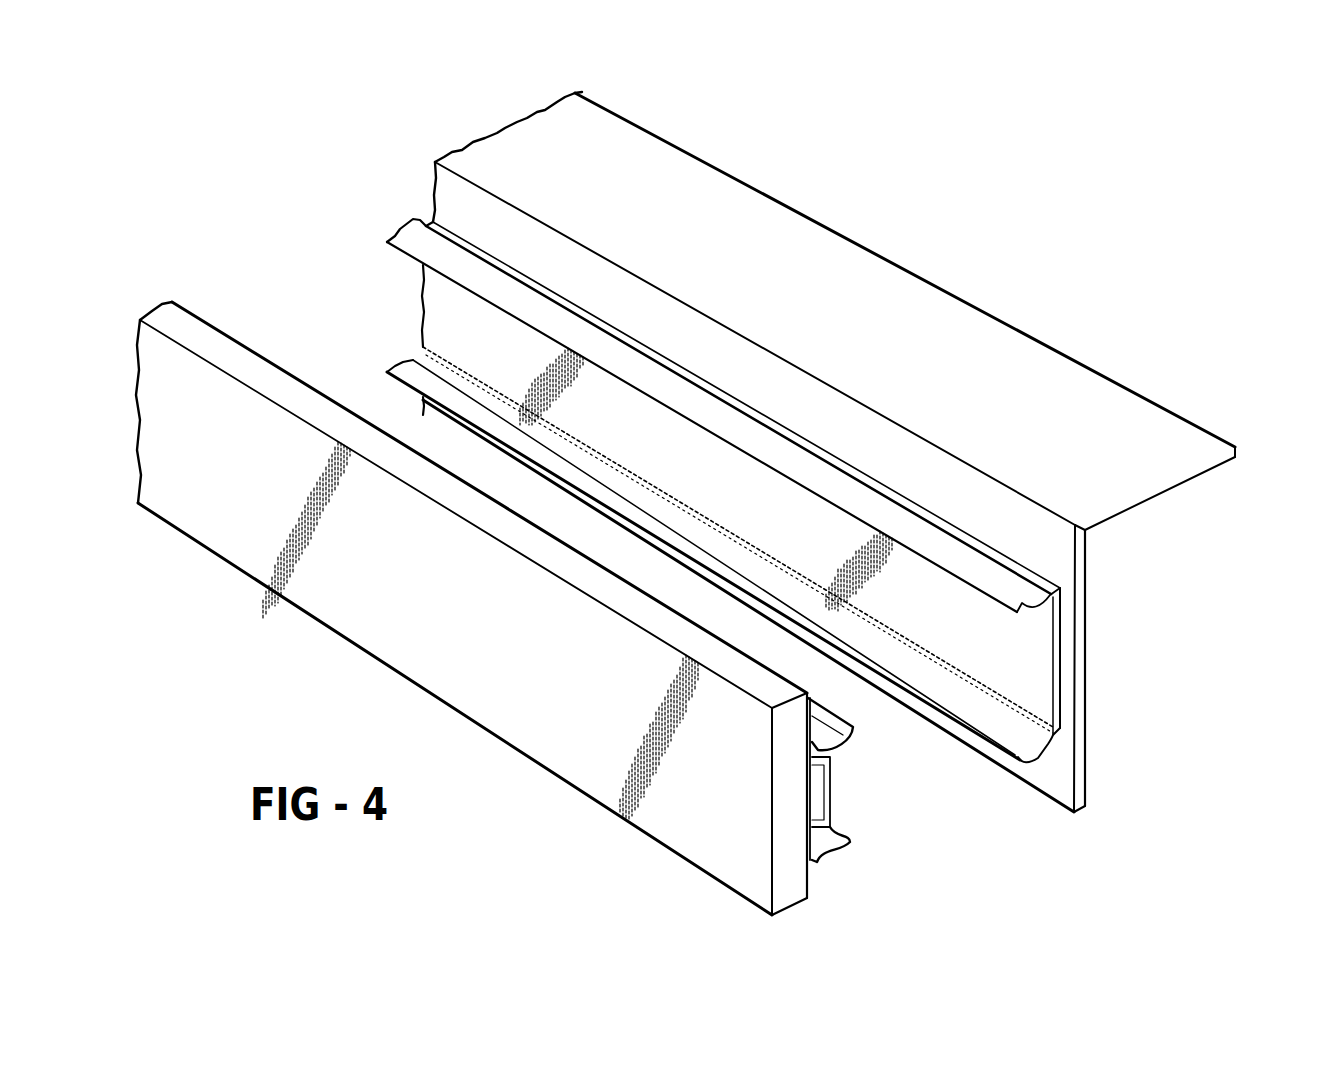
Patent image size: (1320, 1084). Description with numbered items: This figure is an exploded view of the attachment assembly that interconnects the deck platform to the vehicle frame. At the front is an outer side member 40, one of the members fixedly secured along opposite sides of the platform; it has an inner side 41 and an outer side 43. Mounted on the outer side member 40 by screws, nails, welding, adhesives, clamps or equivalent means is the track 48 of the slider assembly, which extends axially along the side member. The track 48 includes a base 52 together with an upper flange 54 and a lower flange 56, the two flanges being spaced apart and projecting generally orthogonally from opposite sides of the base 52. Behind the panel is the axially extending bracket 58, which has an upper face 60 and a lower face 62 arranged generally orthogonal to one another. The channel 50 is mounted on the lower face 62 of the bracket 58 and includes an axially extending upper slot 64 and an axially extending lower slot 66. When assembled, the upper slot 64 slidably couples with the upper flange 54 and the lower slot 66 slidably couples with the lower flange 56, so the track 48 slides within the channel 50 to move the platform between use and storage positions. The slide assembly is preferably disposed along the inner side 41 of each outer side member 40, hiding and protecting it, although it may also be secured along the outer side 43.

The outer side member 40 is at (507, 621).
The inner side 41 is at (813, 877).
The outer side 43 is at (702, 837).
The track 48 is at (913, 812).
The channel 50 is at (437, 293).
The base 52 is at (827, 793).
The upper flange 54 is at (850, 732).
The lower flange 56 is at (840, 842).
The bracket 58 is at (857, 561).
The upper face 60 is at (1113, 508).
The lower face 62 is at (1090, 753).
The upper slot 64 is at (723, 536).
The lower slot 66 is at (1037, 757).